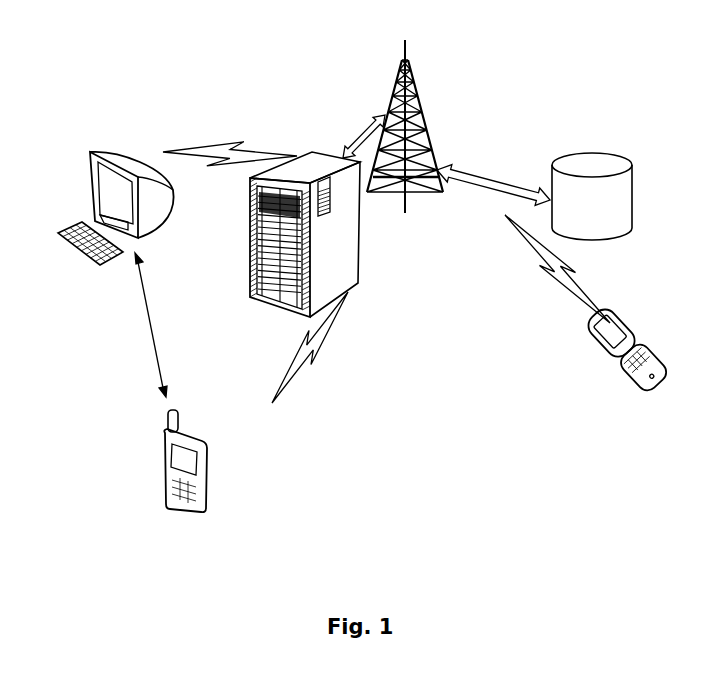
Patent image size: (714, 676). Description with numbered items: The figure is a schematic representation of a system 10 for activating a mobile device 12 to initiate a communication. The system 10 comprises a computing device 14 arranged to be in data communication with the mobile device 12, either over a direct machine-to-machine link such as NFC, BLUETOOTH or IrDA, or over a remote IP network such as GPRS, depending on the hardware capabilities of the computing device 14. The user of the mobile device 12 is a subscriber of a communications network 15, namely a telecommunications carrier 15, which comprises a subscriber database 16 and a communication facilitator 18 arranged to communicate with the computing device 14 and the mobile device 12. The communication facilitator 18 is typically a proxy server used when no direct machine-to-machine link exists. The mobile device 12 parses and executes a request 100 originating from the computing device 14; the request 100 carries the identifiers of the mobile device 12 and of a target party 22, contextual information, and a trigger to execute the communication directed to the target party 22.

The system 10 is at (73, 400).
The mobile device 12 is at (207, 466).
The computing device 14 is at (117, 162).
The communications network 15 is at (402, 80).
The subscriber database 16 is at (598, 211).
The communication facilitator 18 is at (338, 246).
The target party 22 is at (639, 378).
The request to initiate a communication 100 is at (372, 259).